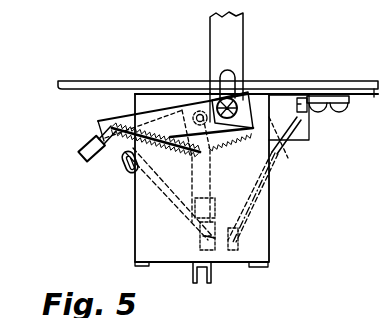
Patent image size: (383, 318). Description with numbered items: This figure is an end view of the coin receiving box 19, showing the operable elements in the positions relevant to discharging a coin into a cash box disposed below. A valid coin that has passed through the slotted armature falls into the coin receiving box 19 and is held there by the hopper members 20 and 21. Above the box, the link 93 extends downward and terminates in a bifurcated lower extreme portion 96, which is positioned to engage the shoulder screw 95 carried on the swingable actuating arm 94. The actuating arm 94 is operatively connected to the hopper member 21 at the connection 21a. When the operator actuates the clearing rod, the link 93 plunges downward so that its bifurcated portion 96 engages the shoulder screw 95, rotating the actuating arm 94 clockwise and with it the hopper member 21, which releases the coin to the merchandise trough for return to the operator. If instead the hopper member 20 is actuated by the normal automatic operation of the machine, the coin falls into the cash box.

The link 93 is at (229, 29).
The bifurcated lower extreme portion 96 is at (236, 80).
The shoulder screw 95 is at (250, 98).
The hopper member 21 is at (197, 206).
The operative connection 21a is at (94, 146).
The swingable actuating arm 94 is at (120, 163).
The hopper member 20 is at (240, 212).
The coin receiving box 19 is at (129, 246).